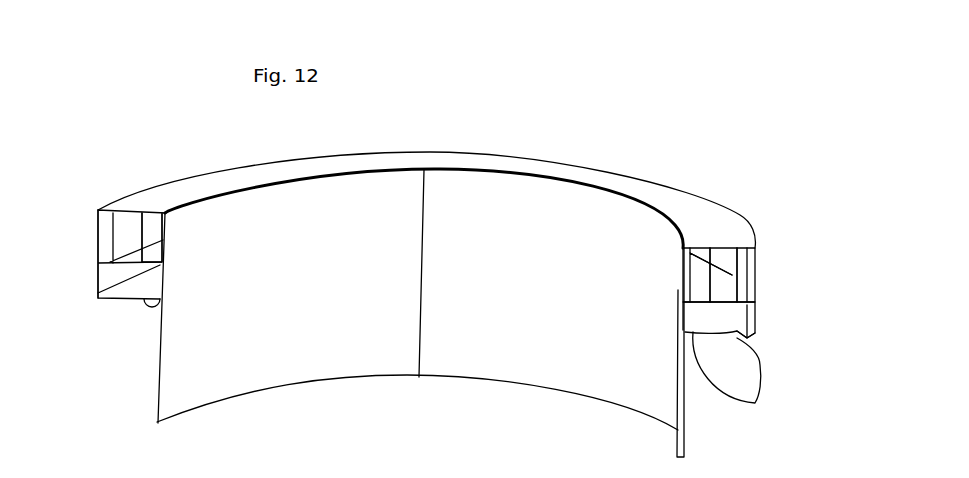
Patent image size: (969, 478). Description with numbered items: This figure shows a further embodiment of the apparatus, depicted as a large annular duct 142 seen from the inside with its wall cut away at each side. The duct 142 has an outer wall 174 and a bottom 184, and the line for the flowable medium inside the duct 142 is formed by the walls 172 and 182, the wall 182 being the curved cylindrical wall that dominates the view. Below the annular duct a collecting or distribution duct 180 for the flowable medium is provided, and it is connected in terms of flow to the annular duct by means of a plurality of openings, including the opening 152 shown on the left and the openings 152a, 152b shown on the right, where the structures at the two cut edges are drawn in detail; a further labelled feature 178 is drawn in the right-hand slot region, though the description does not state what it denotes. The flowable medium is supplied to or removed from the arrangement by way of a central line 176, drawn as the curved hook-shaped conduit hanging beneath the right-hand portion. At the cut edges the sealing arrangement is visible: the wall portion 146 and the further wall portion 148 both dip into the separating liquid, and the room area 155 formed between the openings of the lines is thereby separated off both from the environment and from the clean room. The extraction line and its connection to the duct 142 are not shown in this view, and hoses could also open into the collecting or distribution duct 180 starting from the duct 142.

The duct 142 is at (124, 262).
The wall portion 146 is at (102, 210).
The further wall portion 148 is at (143, 258).
The opening 152 is at (150, 258).
The opening 152a is at (700, 272).
The opening 152b is at (699, 270).
The room area 155 is at (722, 262).
The wall 172 is at (122, 235).
The outer wall 174 is at (98, 213).
The central line 176 is at (747, 385).
The opening 178 is at (706, 266).
The collecting or distribution duct 180 is at (733, 318).
The wall 182 is at (173, 250).
The bottom 184 is at (722, 297).